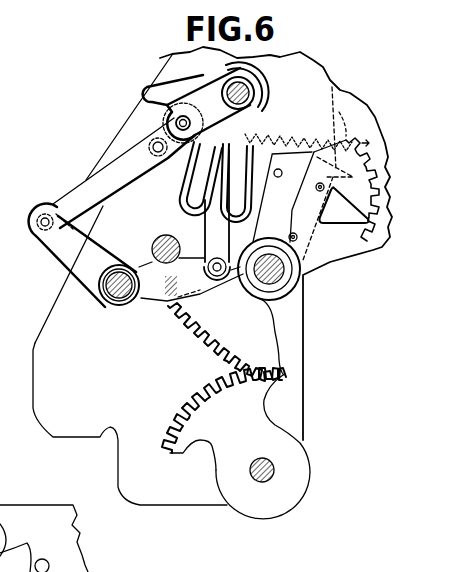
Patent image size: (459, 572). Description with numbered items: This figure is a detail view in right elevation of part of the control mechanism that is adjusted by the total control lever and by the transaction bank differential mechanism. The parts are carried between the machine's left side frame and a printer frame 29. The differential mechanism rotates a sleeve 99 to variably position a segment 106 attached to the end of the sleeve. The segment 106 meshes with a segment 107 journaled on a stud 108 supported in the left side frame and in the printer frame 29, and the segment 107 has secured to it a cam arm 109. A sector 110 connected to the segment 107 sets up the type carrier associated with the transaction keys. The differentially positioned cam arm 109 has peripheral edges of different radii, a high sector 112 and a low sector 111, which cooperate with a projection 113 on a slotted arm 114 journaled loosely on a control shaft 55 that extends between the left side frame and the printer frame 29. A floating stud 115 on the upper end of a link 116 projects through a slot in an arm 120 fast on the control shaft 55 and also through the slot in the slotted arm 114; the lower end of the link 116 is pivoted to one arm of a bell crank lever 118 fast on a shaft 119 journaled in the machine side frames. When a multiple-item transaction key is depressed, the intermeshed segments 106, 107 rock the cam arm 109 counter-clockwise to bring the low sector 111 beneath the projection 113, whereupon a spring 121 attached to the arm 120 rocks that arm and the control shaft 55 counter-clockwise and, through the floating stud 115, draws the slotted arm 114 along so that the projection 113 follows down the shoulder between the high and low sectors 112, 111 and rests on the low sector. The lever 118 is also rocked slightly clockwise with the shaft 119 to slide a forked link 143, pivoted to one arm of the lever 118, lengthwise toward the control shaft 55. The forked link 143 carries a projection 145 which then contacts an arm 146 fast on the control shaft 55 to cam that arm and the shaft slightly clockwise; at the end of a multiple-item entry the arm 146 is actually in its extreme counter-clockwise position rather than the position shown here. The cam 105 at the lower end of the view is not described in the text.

The printer frame 29 is at (184, 497).
The control shaft 55 is at (253, 87).
The sleeve 99 is at (256, 461).
The cam 105 is at (263, 484).
The segment 106 is at (216, 444).
The segment 107 is at (268, 313).
The stud 108 is at (282, 272).
The cam arm 109 is at (266, 206).
The sector 110 is at (350, 140).
The low sector 111 is at (328, 128).
The high sector 112 is at (276, 92).
The projection 113 is at (176, 123).
The slotted arm 114 is at (247, 183).
The floating stud 115 is at (249, 131).
The link 116 is at (212, 218).
The bell crank lever 118 is at (141, 266).
The shaft 119 is at (130, 302).
The arm 120 is at (186, 197).
The spring 121 is at (347, 111).
The forked link 143 is at (112, 167).
The projection 145 is at (152, 147).
The arm 146 is at (145, 90).